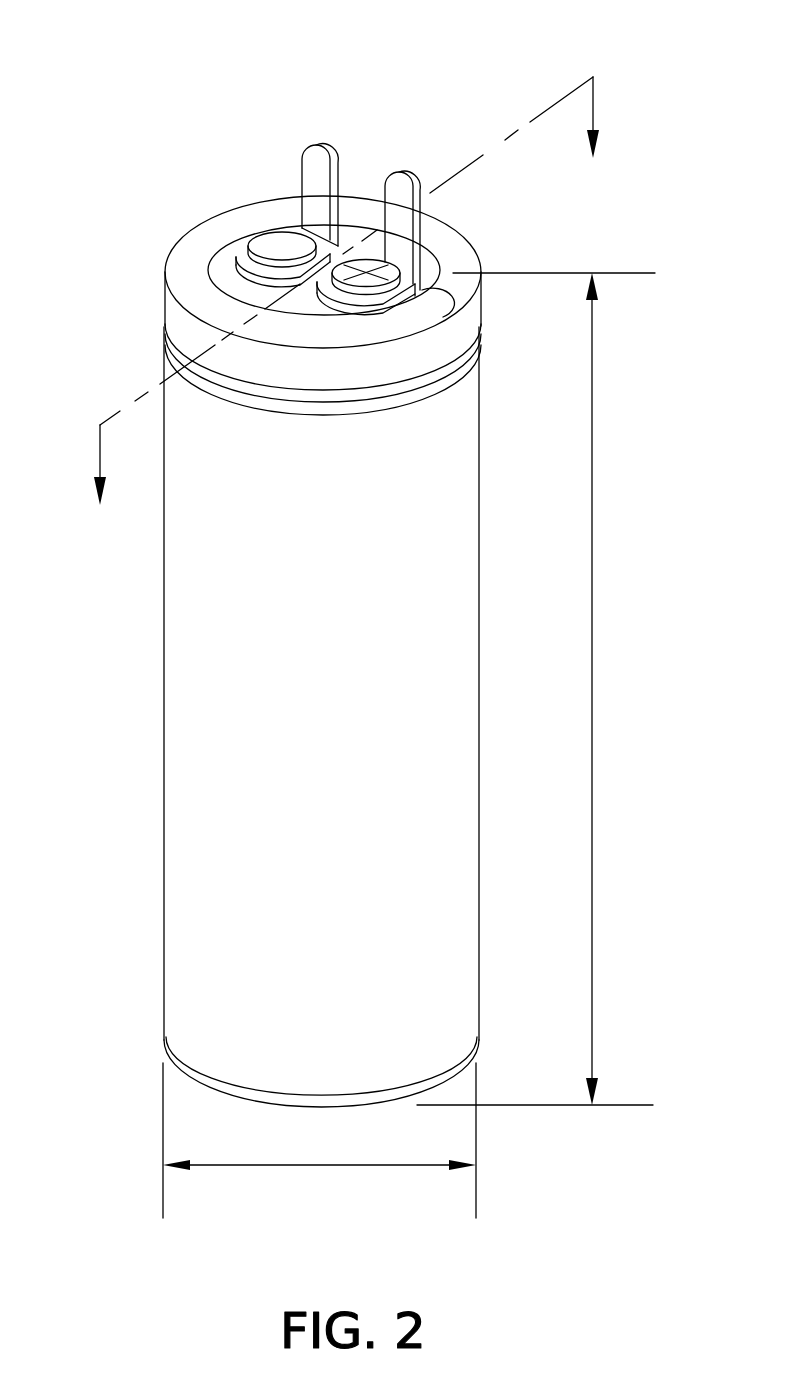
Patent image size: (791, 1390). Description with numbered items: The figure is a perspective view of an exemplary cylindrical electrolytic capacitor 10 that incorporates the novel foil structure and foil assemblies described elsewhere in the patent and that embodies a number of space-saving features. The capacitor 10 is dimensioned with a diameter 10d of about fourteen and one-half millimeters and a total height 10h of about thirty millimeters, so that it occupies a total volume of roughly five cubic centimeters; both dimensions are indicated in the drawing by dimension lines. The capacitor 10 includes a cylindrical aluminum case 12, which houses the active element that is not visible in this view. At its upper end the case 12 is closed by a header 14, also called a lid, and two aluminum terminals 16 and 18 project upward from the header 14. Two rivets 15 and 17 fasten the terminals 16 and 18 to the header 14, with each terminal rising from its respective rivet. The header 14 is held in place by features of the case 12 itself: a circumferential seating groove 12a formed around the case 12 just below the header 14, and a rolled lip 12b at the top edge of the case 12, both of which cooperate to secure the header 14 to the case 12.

The electrolytic capacitor 10 is at (122, 93).
The case 12 is at (177, 657).
The seating groove 12a is at (165, 346).
The rolled lip 12b is at (188, 292).
The header 14 is at (223, 277).
The rivet 15 is at (278, 242).
The terminal 16 is at (313, 157).
The rivet 17 is at (418, 249).
The terminal 18 is at (393, 182).
The total height 10h is at (592, 685).
The diameter 10d is at (318, 1168).